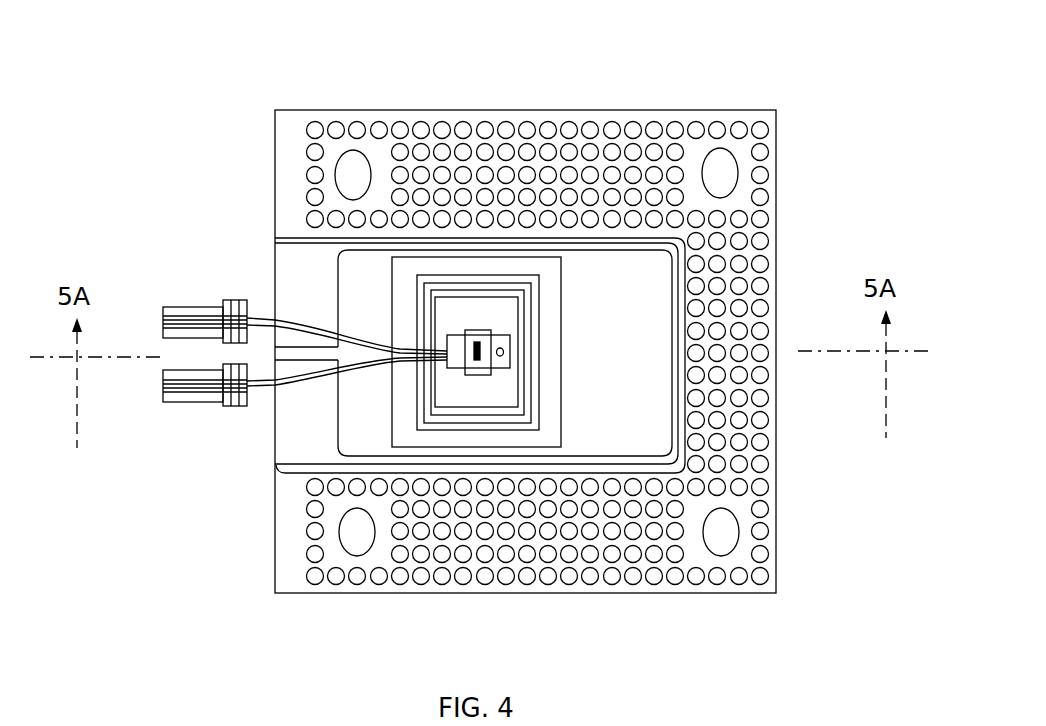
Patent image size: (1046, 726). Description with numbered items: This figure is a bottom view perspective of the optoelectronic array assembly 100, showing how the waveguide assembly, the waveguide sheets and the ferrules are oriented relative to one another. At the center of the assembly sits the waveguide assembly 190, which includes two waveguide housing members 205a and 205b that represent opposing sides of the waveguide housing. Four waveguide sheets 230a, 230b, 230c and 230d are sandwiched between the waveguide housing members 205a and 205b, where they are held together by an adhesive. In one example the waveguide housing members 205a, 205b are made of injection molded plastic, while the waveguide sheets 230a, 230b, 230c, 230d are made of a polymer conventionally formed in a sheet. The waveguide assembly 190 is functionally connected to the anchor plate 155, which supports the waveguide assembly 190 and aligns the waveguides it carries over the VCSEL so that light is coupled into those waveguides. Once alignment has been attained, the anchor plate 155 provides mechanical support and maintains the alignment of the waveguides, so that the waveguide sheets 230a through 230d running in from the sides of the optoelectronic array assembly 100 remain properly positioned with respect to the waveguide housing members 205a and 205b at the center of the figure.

The optoelectronic array assembly 100 is at (809, 92).
The anchor plate 155 is at (482, 312).
The waveguide assembly 190 is at (313, 306).
The waveguide housing member 205a is at (503, 348).
The waveguide housing member 205b is at (508, 362).
The waveguide sheet 230a is at (288, 320).
The waveguide sheet 230b is at (260, 313).
The waveguide sheet 230c is at (260, 387).
The waveguide sheet 230d is at (293, 380).